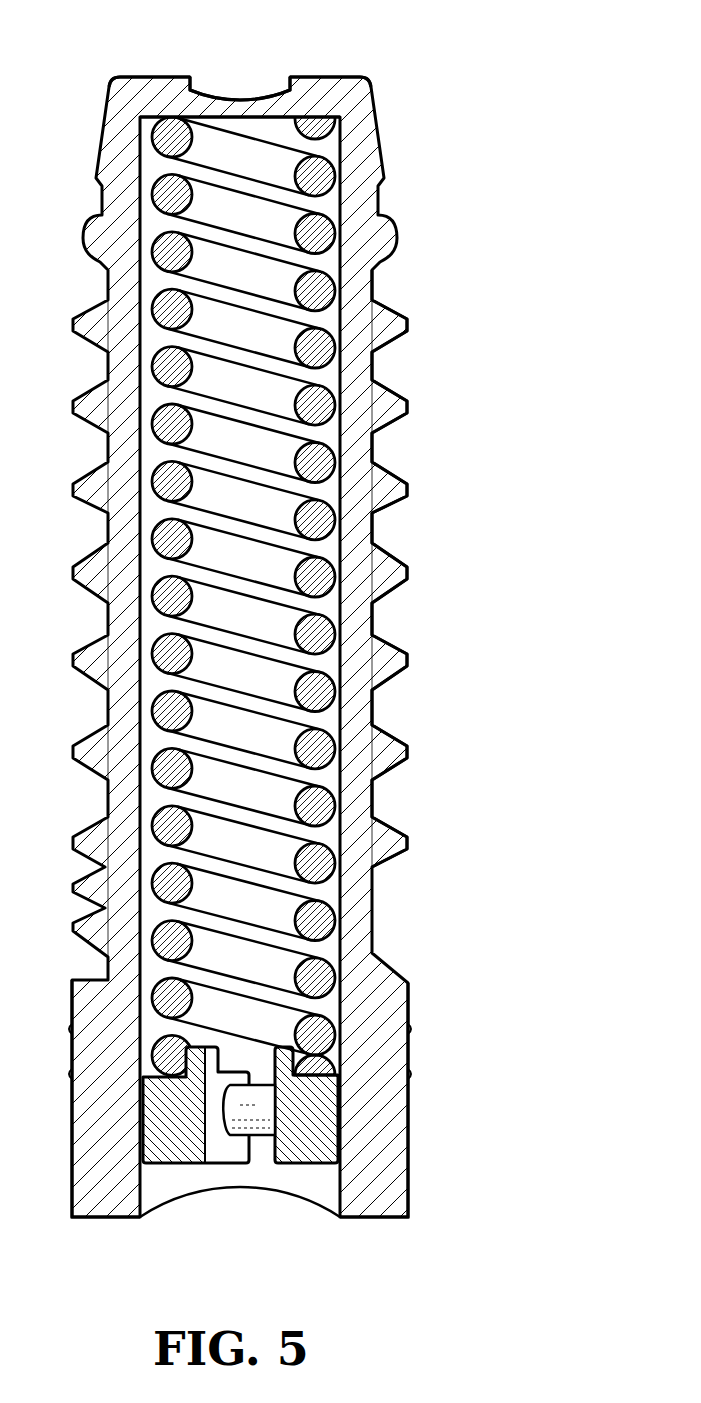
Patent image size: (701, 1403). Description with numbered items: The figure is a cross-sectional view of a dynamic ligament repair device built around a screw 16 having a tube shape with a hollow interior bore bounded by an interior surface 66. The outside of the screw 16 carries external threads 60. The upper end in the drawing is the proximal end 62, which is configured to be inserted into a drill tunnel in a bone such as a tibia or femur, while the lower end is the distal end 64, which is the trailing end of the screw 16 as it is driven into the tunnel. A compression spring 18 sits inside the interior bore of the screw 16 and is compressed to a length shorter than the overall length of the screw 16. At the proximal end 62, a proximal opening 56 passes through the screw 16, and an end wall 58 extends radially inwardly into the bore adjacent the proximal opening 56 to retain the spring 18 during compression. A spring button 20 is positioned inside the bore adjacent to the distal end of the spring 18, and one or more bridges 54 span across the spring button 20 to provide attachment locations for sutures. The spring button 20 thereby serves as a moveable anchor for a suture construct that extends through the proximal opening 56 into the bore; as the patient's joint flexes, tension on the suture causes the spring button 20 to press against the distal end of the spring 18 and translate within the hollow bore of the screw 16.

The screw 16 is at (535, 451).
The compression spring 18 is at (320, 748).
The spring button 20 is at (300, 1167).
The bridge 54 is at (260, 1127).
The proximal opening 56 is at (264, 70).
The end wall 58 is at (173, 117).
The external threads 60 is at (407, 573).
The proximal end 62 is at (407, 76).
The distal end 64 is at (462, 1215).
The interior surface 66 is at (152, 1182).